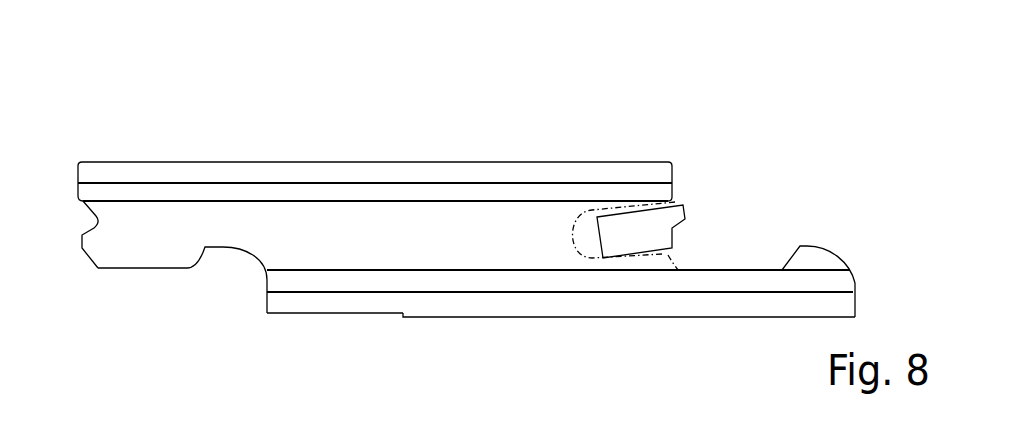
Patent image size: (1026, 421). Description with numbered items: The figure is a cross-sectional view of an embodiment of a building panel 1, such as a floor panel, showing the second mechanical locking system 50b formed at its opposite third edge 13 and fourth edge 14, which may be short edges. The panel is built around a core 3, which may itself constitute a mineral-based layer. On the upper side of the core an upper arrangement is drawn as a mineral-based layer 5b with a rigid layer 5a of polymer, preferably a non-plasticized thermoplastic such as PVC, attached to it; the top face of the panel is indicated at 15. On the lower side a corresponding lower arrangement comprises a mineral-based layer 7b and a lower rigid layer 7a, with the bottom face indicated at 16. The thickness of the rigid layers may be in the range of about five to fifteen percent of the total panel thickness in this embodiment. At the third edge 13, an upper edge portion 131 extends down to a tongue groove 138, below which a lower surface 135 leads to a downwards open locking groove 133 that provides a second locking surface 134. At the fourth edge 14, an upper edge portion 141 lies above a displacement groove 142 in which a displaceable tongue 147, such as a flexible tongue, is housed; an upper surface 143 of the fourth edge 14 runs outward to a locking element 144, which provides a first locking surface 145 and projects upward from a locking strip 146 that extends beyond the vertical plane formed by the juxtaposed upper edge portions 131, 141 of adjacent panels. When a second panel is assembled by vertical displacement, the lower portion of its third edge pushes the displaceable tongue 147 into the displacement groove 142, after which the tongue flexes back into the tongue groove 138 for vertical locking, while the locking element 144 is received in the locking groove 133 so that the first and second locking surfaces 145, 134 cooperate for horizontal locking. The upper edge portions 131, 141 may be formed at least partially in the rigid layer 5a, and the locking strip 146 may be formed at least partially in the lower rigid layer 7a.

The second mechanical locking system 50b is at (92, 72).
The building panel 1 is at (323, 120).
The core 3 is at (385, 245).
The third edge 13 is at (369, 214).
The fourth edge 14 is at (561, 226).
The upper surface 15 is at (590, 162).
The lower surface 16 is at (573, 320).
The rigid layer 5a is at (403, 165).
The mineral-based layer 5b is at (440, 193).
The lower rigid layer 7a is at (362, 307).
The mineral-based layer 7b is at (427, 281).
The upper edge portion 131 is at (78, 175).
The locking groove 133 is at (233, 262).
The second locking surface 134 is at (198, 257).
The lower contact surface of first edge portion 135 is at (140, 268).
The tongue groove 138 is at (82, 225).
The upper edge portion 141 is at (673, 182).
The displacement groove 142 is at (587, 243).
The upper contact surface of second edge portion 143 is at (722, 268).
The locking element 144 is at (817, 255).
The first locking surface 145 is at (793, 255).
The locking strip 146 is at (725, 297).
The displaceable tongue 147 is at (633, 248).